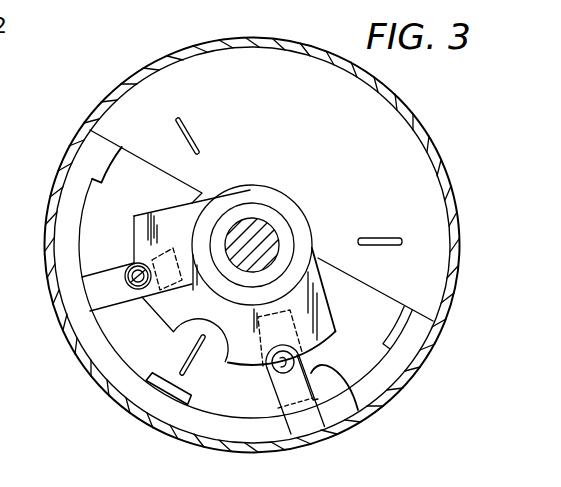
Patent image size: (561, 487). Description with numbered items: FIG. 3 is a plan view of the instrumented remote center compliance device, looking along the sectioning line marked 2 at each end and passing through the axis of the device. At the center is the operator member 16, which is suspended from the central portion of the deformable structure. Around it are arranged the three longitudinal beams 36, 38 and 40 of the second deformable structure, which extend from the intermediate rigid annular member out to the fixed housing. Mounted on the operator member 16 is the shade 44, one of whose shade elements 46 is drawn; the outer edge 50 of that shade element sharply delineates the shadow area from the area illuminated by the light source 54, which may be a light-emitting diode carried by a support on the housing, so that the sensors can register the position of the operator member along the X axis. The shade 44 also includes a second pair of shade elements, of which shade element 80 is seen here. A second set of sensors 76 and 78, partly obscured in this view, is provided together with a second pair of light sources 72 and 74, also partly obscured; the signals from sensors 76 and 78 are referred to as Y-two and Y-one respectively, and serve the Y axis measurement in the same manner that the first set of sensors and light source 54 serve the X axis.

The section line 2- 2 is at (252, 246).
The operator member 16 is at (251, 228).
The longitudinal beam 36 is at (189, 130).
The longitudinal beam 38 is at (379, 240).
The longitudinal beam 40 is at (187, 354).
The shade 44 is at (315, 250).
The shade element 46 is at (180, 232).
The outer edge 50 is at (139, 238).
The light source 54 is at (137, 280).
The light source 72 is at (279, 365).
The light source 74 is at (269, 382).
The sensor 76 is at (358, 410).
The sensor 78 is at (270, 390).
The shade element 80 is at (325, 320).